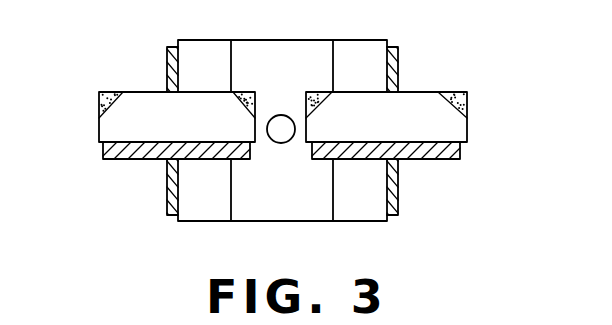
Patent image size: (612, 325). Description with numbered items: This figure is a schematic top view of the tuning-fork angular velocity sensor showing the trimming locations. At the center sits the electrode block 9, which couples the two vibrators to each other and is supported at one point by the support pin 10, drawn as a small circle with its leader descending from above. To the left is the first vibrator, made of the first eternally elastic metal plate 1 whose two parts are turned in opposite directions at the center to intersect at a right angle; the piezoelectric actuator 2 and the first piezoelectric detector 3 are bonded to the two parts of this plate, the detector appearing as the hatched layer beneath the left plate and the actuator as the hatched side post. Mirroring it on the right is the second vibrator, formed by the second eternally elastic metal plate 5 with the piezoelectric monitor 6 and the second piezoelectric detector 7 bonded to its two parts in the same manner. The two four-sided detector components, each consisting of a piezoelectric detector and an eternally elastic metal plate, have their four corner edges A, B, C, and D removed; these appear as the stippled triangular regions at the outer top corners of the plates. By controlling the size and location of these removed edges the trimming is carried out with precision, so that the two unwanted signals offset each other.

The first eternally elastic metal plate 1 is at (208, 212).
The piezoelectric actuator 2 is at (166, 199).
The first piezoelectric detector 3 is at (125, 160).
The second eternally elastic metal plate 5 is at (358, 209).
The piezoelectric monitor 6 is at (398, 190).
The second piezoelectric detector 7 is at (431, 160).
The electrode block 9 is at (280, 212).
The support pin 10 is at (283, 117).
The corner edge A is at (114, 96).
The corner edge B is at (249, 95).
The corner edge C is at (316, 98).
The corner edge D is at (466, 100).